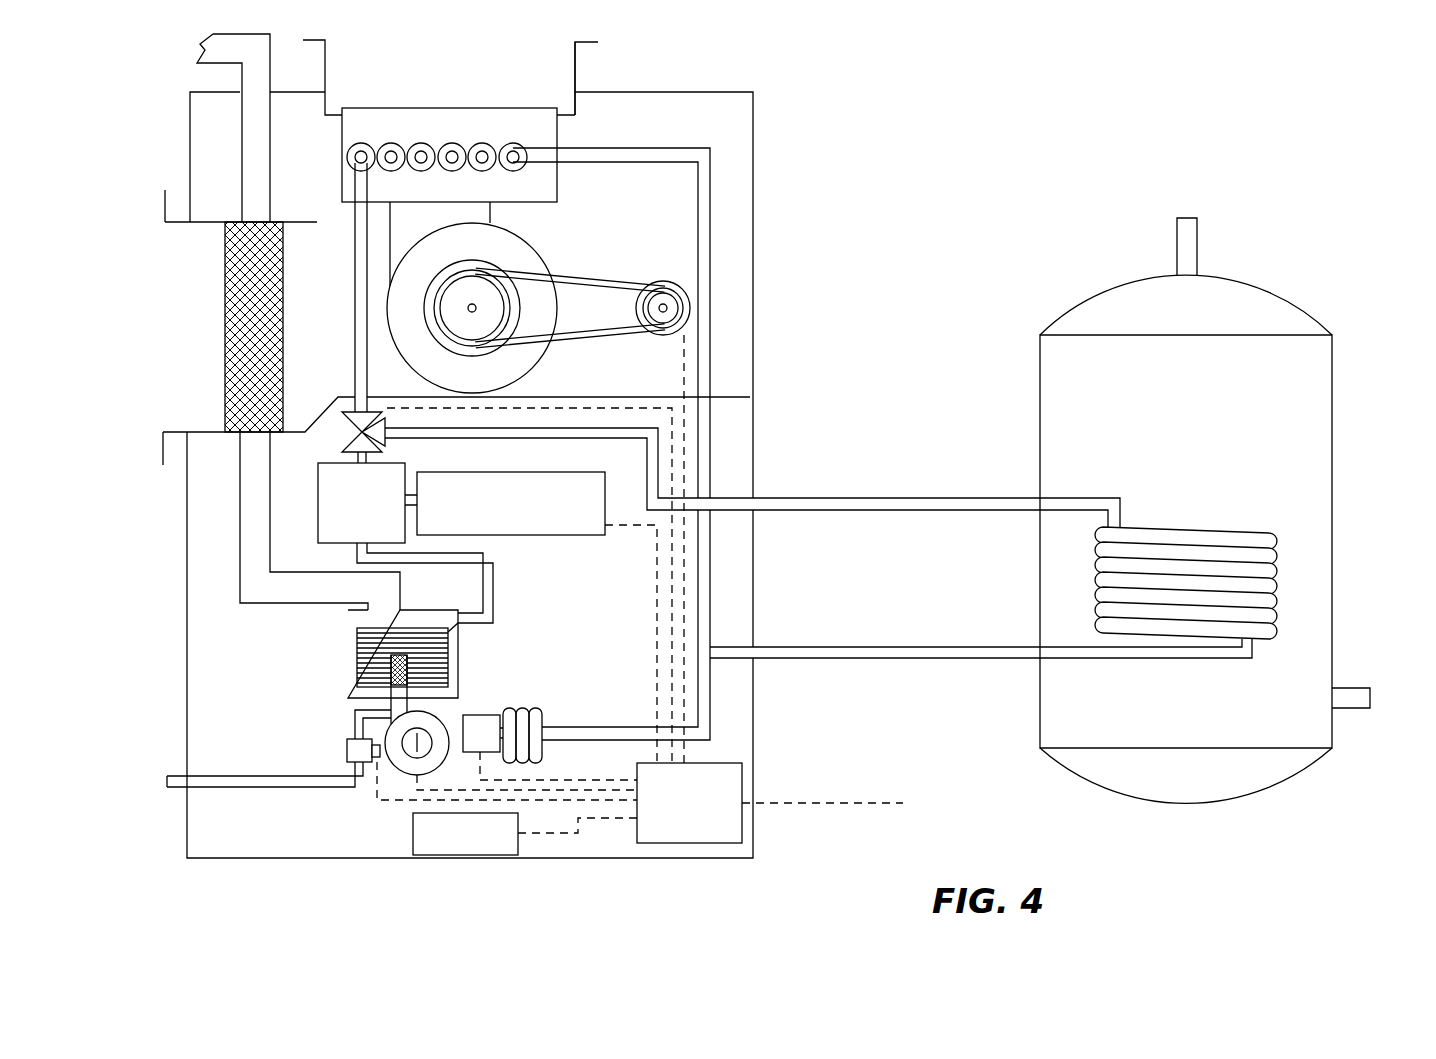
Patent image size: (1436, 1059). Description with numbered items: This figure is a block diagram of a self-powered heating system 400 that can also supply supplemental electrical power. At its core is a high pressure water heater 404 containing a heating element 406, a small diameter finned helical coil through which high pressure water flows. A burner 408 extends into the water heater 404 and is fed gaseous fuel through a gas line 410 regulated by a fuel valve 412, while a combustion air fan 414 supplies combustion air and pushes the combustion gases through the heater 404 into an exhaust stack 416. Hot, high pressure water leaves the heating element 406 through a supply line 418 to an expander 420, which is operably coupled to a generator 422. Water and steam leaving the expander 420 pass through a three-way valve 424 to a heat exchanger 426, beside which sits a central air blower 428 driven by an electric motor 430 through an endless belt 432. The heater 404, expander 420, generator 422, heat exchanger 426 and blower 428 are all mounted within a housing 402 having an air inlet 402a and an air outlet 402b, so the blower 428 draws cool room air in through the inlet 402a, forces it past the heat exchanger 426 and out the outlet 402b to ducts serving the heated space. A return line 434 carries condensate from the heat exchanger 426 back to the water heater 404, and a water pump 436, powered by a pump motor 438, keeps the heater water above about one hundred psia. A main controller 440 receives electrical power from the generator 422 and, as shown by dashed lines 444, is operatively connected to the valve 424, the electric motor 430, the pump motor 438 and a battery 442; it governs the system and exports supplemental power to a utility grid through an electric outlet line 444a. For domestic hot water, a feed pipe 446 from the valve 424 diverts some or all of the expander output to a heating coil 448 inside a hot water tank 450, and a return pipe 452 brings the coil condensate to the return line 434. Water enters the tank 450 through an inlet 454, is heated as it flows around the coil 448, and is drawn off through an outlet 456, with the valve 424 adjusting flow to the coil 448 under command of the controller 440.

The heating system 400 is at (852, 117).
The housing 402 is at (757, 240).
The air inlet 402a is at (181, 214).
The air outlet 402b is at (576, 62).
The water heater 404 is at (348, 645).
The heating element 406 is at (448, 655).
The burner 408 is at (410, 708).
The gas line 410 is at (255, 776).
The fuel valve 412 is at (348, 745).
The combustion air fan 414 is at (400, 775).
The exhaust stack 416 is at (238, 527).
The supply line 418 is at (495, 578).
The expander 420 is at (318, 487).
The generator 422 is at (503, 537).
The three-way valve 424 is at (350, 440).
The heat exchanger 426 is at (345, 157).
The central air blower 428 is at (527, 238).
The electric motor 430 is at (665, 336).
The endless belt 432 is at (596, 278).
The return line 434 is at (713, 360).
The water pump 436 is at (537, 720).
The pump motor 438 is at (482, 715).
The main controller 440 is at (710, 845).
The battery 442 is at (412, 847).
The dashed lines 444 is at (683, 753).
The electric outlet line 444a is at (840, 803).
The feed pipe 446 is at (845, 498).
The heating coil 448 is at (1170, 528).
The hot water tank 450 is at (1333, 433).
The return pipe 452 is at (842, 658).
The inlet 454 is at (1352, 688).
The outlet 456 is at (1198, 243).